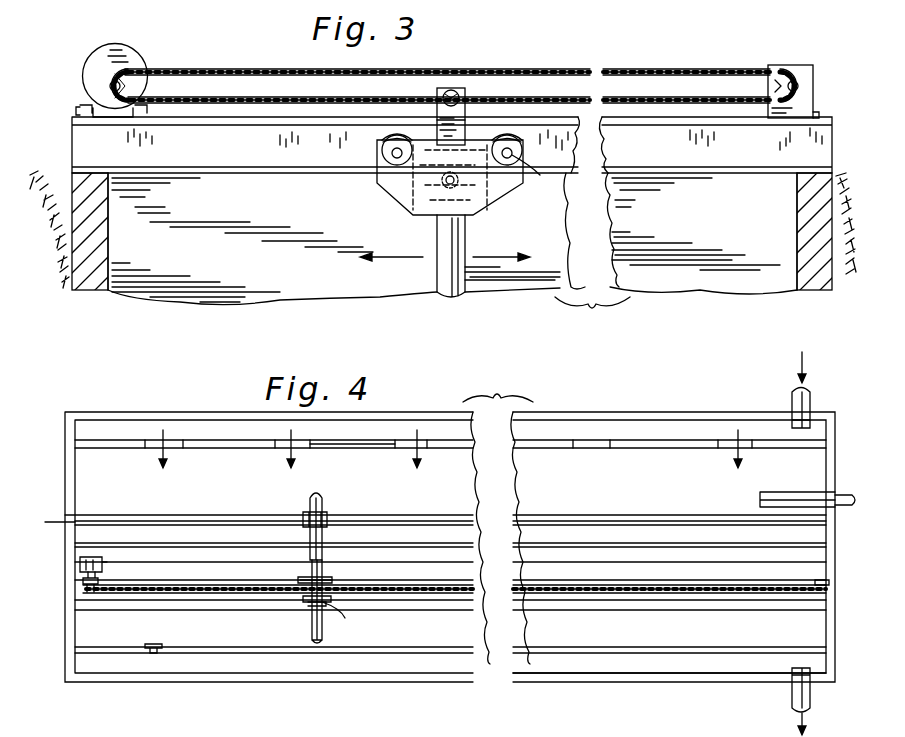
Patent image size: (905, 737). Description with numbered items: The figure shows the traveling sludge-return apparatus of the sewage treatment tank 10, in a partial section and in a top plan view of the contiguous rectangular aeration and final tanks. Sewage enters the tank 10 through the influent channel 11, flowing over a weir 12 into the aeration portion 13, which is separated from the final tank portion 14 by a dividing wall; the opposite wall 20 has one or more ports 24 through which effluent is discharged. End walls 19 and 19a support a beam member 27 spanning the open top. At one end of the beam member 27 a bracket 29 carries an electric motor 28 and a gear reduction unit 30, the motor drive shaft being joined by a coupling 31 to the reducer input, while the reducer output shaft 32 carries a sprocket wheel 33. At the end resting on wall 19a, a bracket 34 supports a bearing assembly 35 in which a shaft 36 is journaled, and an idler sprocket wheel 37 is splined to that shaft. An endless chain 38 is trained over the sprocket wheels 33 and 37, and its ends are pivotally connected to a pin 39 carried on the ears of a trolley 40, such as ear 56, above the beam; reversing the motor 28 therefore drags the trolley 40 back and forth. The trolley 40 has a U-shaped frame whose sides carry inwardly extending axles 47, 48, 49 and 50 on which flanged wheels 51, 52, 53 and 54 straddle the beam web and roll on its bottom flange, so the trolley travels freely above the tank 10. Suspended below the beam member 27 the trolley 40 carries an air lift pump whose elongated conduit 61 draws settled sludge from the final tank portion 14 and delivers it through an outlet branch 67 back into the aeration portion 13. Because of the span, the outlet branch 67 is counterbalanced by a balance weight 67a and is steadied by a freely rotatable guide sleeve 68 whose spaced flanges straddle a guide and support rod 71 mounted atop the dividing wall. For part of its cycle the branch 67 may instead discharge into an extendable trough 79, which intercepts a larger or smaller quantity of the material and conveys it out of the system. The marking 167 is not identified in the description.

In FIG. 4, the tank 10 is at (573, 691).
In FIG. 4, the influent channel 11 is at (812, 402).
In FIG. 4, the weir 12 is at (176, 449).
In FIG. 4, the aeration portion 13 is at (352, 464).
In FIG. 4, the final tank portion 14 is at (740, 583).
In FIG. 3, the end wall 19 is at (70, 262).
In FIG. 3, the end wall 19a is at (727, 221).
In FIG. 4, the wall 20 is at (608, 652).
In FIG. 4, the port 24 is at (743, 671).
In FIG. 3, the beam member 27 is at (236, 172).
In FIG. 4, the electric motor 28 is at (63, 550).
In FIG. 3, the bracket 29 is at (80, 106).
In FIG. 3, the gear reduction unit 30 is at (108, 52).
In FIG. 4, the gear reduction unit 30 is at (85, 590).
In FIG. 4, the coupling 31 is at (80, 573).
In FIG. 4, the output shaft 32 is at (750, 595).
In FIG. 3, the sprocket wheel 33 is at (138, 78).
In FIG. 3, the bracket 34 is at (815, 114).
In FIG. 3, the bearing assembly 35 is at (825, 58).
In FIG. 3, the shaft 36 is at (790, 78).
In FIG. 3, the idler sprocket wheel 37 is at (775, 90).
In FIG. 3, the endless chain 38 is at (244, 58).
In FIG. 3, the pin 39 is at (453, 90).
In FIG. 3, the trolley 40 is at (505, 198).
In FIG. 4, the axle 47 is at (298, 580).
In FIG. 3, the axle 48 is at (393, 135).
In FIG. 4, the axle 48 is at (326, 580).
In FIG. 3, the axle 49 is at (540, 165).
In FIG. 4, the axle 49 is at (326, 604).
In FIG. 3, the axle 50 is at (392, 154).
In FIG. 4, the axle 50 is at (303, 600).
In FIG. 4, the flanged wheel 51 is at (324, 606).
In FIG. 3, the flanged wheel 52 is at (506, 135).
In FIG. 3, the flanged wheel 53 is at (382, 140).
In FIG. 3, the flanged wheel 54 is at (522, 142).
In FIG. 3, the ear 56 is at (455, 117).
In FIG. 3, the elongated conduit 61 is at (437, 277).
In FIG. 4, the outlet branch 67 is at (306, 520).
In FIG. 4, the balance weight 67a is at (310, 636).
In FIG. 4, the guide sleeve 68 is at (328, 518).
In FIG. 4, the guide and support rod 71 is at (598, 516).
In FIG. 4, the extendable trough 79 is at (778, 495).
In FIG. 4, the numeral 167 is at (291, 728).